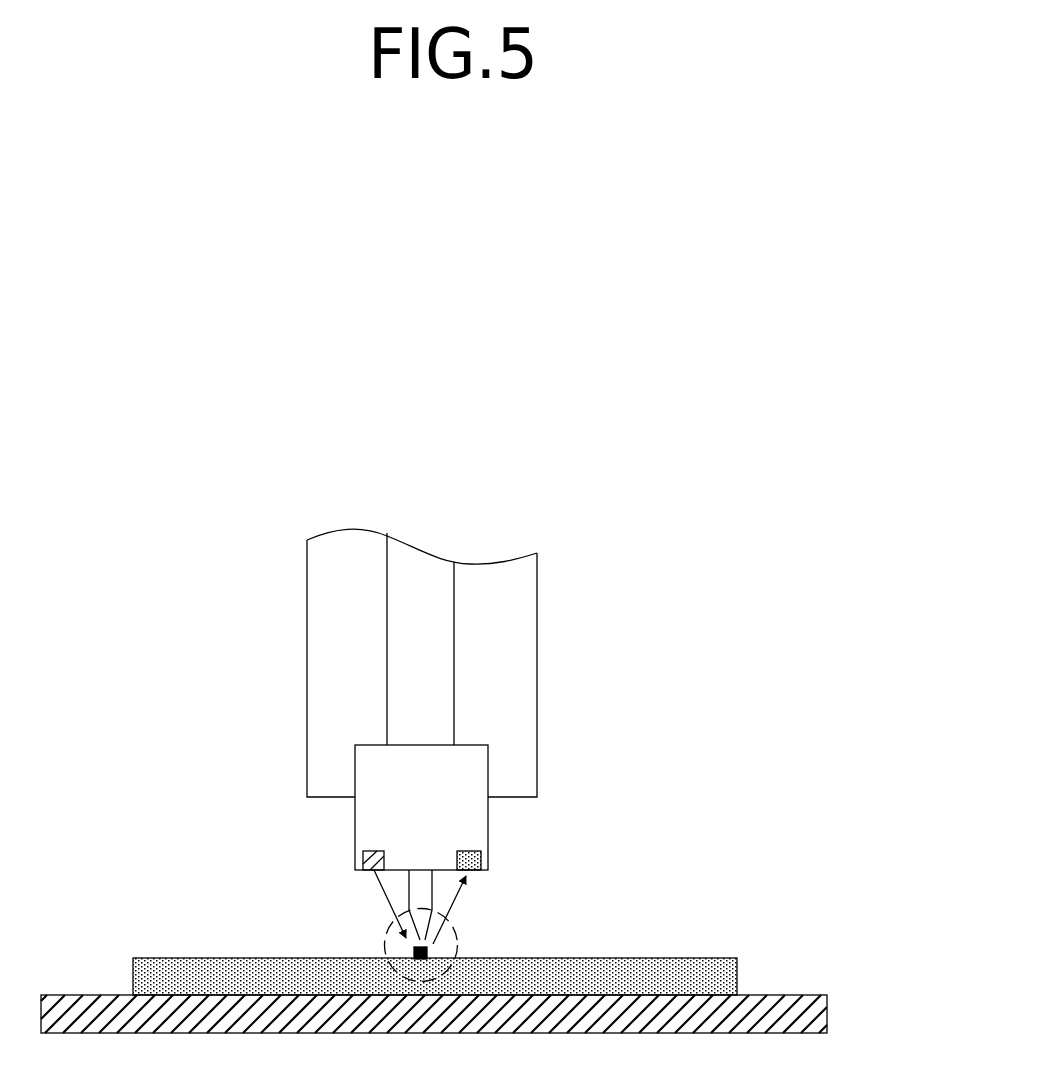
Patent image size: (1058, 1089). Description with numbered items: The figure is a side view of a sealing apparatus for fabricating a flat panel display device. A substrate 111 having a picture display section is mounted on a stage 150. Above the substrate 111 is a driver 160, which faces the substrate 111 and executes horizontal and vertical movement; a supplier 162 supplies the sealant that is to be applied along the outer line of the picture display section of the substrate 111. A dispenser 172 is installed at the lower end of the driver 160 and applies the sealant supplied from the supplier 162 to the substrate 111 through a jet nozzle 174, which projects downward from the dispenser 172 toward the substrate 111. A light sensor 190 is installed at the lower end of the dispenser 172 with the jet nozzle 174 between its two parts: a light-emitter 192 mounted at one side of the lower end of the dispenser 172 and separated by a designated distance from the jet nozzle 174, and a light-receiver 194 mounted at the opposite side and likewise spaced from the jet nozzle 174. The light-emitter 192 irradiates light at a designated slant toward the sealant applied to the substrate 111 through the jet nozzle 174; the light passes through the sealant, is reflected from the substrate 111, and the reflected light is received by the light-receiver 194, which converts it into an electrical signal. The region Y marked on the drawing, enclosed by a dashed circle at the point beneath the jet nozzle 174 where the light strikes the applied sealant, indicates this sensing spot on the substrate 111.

The substrate 111 is at (737, 975).
The stage 150 is at (827, 1015).
The driver 160 is at (527, 700).
The supplier 162 is at (450, 638).
The dispenser 172 is at (365, 828).
The jet nozzle 174 is at (430, 907).
The light sensor 190 is at (578, 830).
The light-emitter 192 is at (388, 850).
The light-receiver 194 is at (481, 868).
The ink landing region Y is at (384, 942).